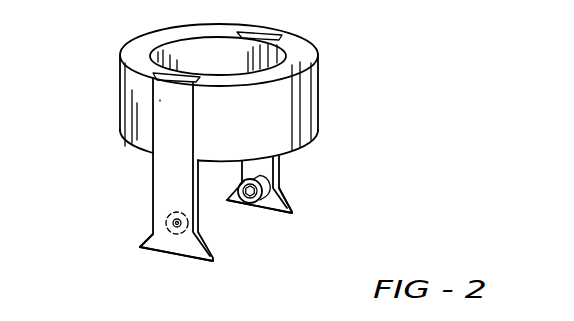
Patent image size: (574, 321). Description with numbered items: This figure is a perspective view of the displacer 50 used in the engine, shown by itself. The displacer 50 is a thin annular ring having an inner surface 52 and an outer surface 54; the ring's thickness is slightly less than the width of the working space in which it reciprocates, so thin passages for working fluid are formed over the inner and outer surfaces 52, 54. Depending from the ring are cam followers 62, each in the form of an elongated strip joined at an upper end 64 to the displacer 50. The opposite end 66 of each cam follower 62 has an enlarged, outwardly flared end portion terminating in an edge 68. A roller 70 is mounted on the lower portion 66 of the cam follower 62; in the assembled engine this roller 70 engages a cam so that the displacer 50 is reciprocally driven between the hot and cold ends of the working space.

The displacer 50 is at (90, 113).
The inner surface 52 is at (173, 48).
The outer surface 54 is at (122, 60).
The cam follower 62 is at (163, 176).
The upper end 64 is at (163, 125).
The opposite end 66 is at (155, 237).
The edge 68 is at (165, 257).
The roller 70 is at (200, 228).